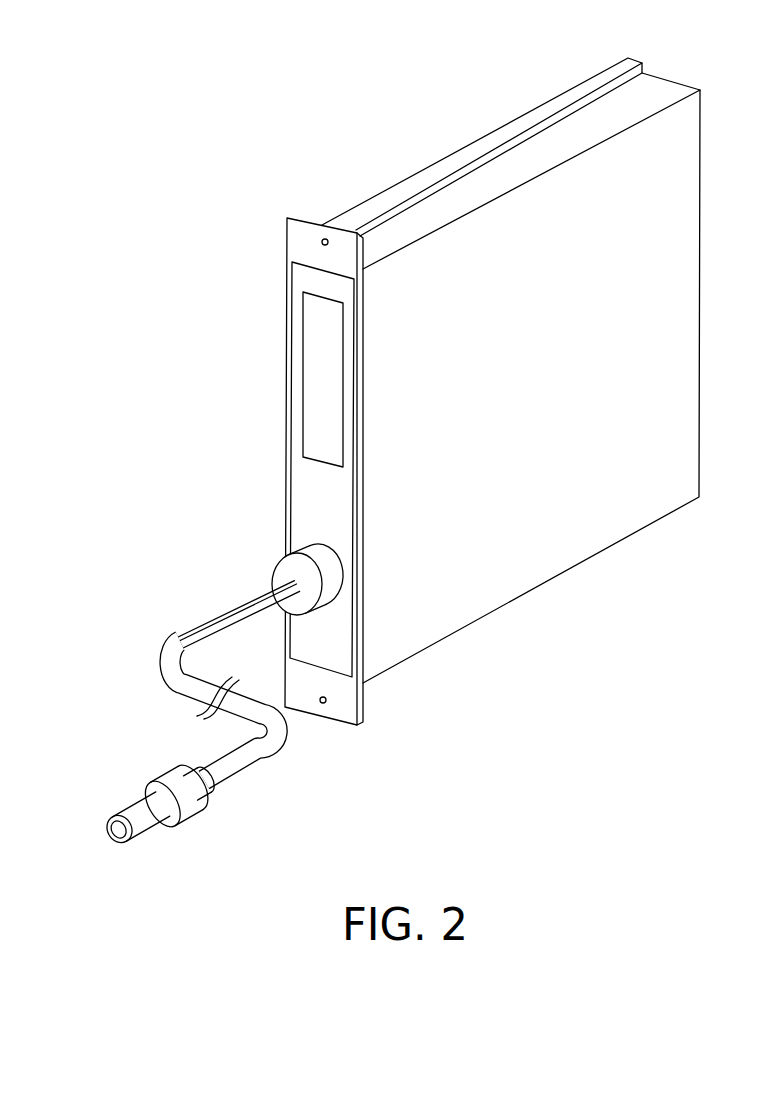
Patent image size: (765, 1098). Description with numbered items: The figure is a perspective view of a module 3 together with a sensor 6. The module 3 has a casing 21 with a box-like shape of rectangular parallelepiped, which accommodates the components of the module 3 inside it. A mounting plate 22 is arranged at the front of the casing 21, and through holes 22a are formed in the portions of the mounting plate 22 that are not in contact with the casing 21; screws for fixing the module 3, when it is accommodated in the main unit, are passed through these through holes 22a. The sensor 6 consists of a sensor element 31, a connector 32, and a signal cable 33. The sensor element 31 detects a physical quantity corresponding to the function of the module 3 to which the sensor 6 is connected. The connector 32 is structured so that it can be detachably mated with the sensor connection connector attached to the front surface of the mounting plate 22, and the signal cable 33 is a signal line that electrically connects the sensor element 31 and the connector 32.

The module 3 is at (453, 383).
The casing 21 is at (578, 468).
The mounting plate 22 is at (300, 468).
The through holes 22a is at (347, 177).
The sensor 6 is at (226, 683).
The sensor element 31 is at (133, 802).
The connector 32 is at (293, 565).
The signal cable 33 is at (180, 628).